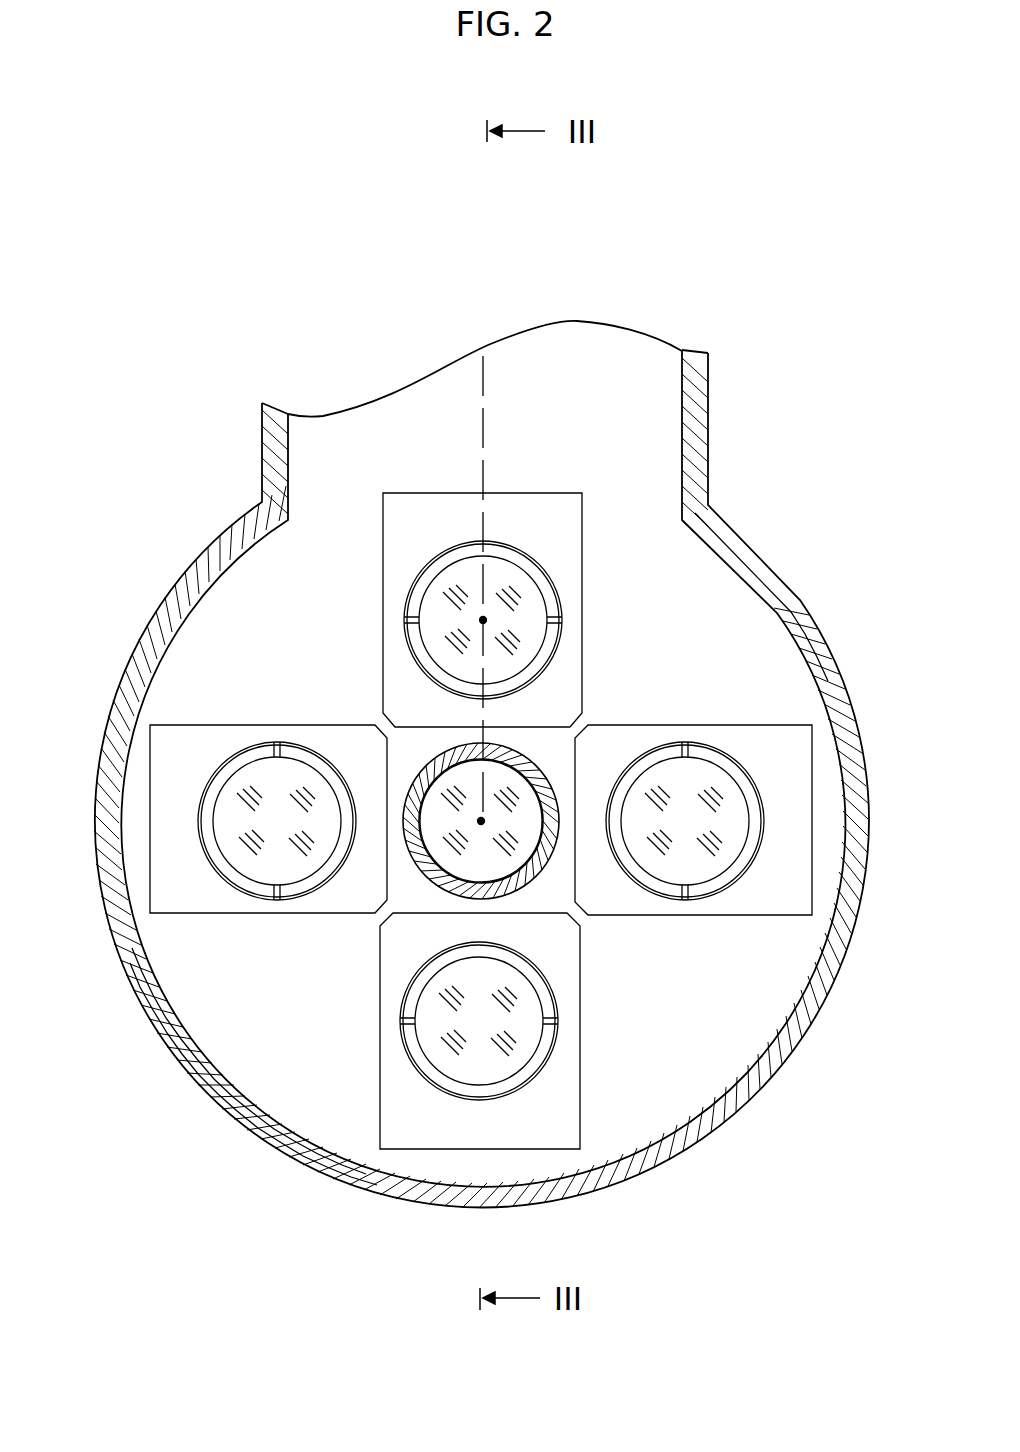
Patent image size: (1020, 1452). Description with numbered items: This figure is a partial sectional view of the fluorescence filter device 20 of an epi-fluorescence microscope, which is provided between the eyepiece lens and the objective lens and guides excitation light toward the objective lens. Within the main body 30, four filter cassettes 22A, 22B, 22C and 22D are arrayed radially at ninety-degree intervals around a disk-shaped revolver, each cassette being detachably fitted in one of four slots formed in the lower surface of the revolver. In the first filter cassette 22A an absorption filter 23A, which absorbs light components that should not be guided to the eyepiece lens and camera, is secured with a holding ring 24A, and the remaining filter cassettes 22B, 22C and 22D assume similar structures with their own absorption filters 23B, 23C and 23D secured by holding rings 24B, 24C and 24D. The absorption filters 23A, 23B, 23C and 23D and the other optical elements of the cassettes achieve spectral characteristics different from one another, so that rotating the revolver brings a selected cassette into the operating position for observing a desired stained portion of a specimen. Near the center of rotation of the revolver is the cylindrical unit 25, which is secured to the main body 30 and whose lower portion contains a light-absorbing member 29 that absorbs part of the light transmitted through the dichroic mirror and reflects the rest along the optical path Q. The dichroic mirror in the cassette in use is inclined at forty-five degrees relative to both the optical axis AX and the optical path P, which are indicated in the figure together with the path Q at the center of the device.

The fluorescence filter device 20 is at (745, 413).
The filter cassette 22A is at (510, 493).
The filter cassette 22B is at (673, 723).
The filter cassette 22C is at (579, 1071).
The filter cassette 22D is at (240, 916).
The absorption filter 23A is at (527, 604).
The absorption filter 23B is at (698, 871).
The absorption filter 23C is at (523, 1003).
The absorption filter 23D is at (258, 762).
The holding ring 24A is at (418, 588).
The holding ring 24B is at (723, 760).
The holding ring 24C is at (401, 1051).
The holding ring 24D is at (308, 748).
The cylindrical unit 25 is at (532, 871).
The central lens holder 29 is at (438, 858).
The main body 30 is at (742, 530).
The optical path P is at (488, 411).
The optical path Q is at (481, 821).
The optical axis AX is at (483, 620).